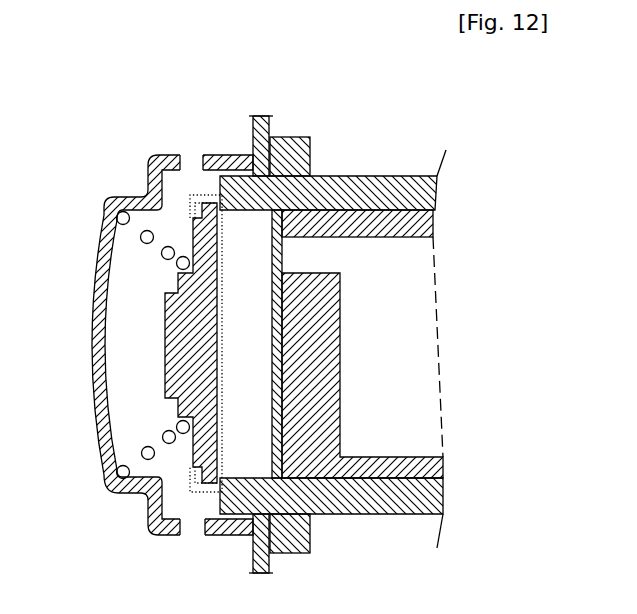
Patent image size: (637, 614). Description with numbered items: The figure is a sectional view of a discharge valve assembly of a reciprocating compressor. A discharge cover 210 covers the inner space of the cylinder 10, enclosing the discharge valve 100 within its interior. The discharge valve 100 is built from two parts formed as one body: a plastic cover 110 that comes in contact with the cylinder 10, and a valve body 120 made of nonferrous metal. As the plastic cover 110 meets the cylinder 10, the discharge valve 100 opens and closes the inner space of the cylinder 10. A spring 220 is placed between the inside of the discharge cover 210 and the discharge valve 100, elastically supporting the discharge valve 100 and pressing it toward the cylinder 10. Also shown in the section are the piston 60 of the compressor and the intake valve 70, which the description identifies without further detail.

The cylinder 10 is at (386, 175).
The piston 60 is at (380, 483).
The intake valve 70 is at (271, 242).
The discharge valve 100 is at (156, 299).
The plastic cover 110 is at (218, 323).
The valve body 120 is at (166, 361).
The discharge cover 210 is at (139, 171).
The spring 220 is at (139, 447).